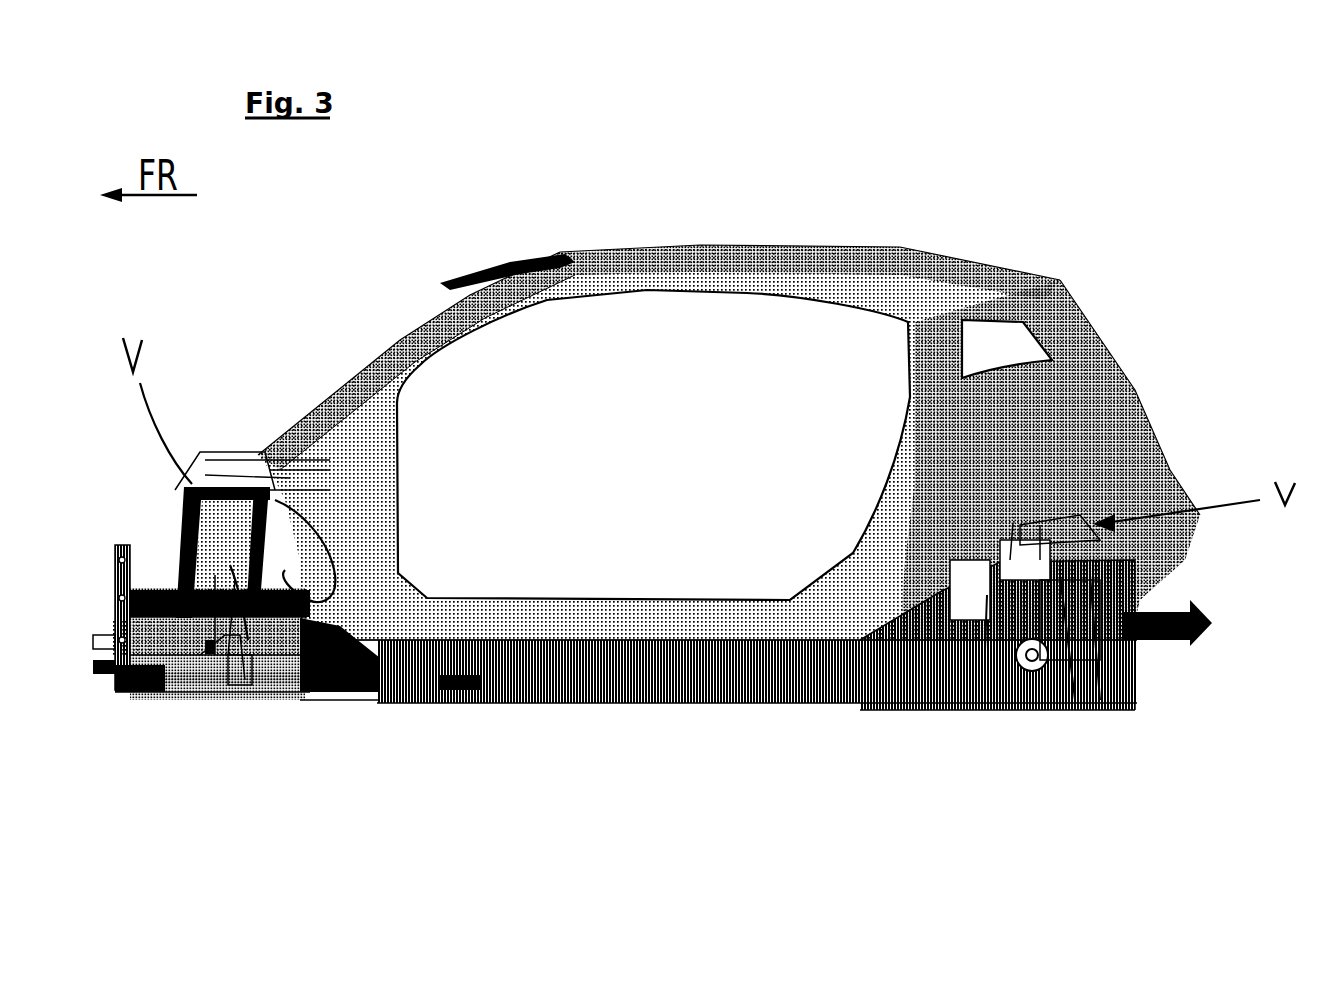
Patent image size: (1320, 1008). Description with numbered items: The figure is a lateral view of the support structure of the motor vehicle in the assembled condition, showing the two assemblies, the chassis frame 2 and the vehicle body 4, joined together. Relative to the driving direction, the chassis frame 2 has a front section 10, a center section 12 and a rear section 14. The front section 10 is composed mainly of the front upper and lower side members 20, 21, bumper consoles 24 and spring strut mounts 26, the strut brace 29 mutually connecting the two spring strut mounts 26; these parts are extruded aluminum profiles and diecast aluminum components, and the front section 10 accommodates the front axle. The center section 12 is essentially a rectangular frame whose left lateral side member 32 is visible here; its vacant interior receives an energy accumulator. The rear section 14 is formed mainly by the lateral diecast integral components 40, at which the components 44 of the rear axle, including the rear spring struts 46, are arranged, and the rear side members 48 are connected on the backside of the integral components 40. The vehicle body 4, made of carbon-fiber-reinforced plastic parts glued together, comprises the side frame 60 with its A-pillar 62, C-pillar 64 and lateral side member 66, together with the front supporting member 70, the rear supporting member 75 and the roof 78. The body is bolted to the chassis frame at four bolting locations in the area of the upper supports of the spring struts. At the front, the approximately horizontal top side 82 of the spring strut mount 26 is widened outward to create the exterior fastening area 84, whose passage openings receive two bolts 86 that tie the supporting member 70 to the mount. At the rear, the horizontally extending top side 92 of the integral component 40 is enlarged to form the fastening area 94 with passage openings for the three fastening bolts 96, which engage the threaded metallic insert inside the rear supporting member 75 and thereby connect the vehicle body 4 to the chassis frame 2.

The chassis frame 2 is at (599, 768).
The vehicle body 4 is at (940, 178).
The front section 10 is at (222, 782).
The center section 12 is at (667, 750).
The rear section 14 is at (1024, 757).
The front upper side member 20 is at (152, 598).
The front lower side member 21 is at (182, 684).
The bumper console 24 is at (193, 533).
The spring strut mount 26 is at (243, 637).
The strut brace 29 is at (210, 484).
The left lateral side member 32 is at (366, 697).
The integral component 40 is at (937, 708).
The rear axle component 44 is at (1032, 655).
The rear spring strut 46 is at (1062, 570).
The rear side member 48 is at (1180, 628).
The side frame 60 is at (741, 498).
The A-pillar 62 is at (373, 465).
The C-pillar 64 is at (945, 358).
The lateral side member 66 is at (543, 610).
The front supporting member 70 is at (212, 460).
The rear supporting member 75 is at (1065, 506).
The roof 78 is at (690, 258).
The top side of spring strut mount 82 is at (166, 386).
The exterior fastening area 84 is at (190, 482).
The bolt 86 is at (210, 486).
The top side of integral component 92 is at (1170, 467).
The fastening area 94 is at (1075, 510).
The fastening bolt 96 is at (1013, 523).